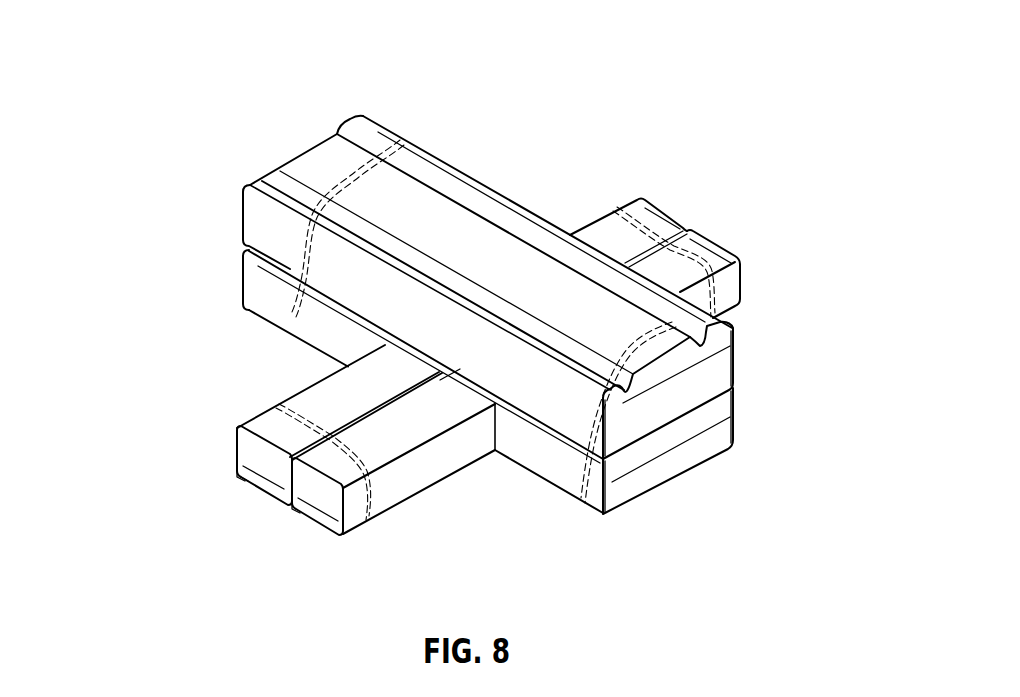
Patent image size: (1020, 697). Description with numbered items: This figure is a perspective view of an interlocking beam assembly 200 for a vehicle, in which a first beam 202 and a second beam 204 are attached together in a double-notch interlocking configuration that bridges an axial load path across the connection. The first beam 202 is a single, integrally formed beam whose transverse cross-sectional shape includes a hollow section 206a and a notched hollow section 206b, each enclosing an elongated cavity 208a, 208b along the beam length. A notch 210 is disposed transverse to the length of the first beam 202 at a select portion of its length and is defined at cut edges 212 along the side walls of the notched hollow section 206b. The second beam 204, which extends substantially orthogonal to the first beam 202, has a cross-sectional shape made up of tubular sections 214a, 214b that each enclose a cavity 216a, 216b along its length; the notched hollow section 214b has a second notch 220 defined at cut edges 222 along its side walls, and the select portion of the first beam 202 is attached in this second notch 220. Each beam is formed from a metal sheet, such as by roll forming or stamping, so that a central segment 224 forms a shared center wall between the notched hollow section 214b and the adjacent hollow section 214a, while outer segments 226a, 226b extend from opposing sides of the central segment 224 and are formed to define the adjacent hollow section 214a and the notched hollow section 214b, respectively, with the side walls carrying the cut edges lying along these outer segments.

The interlocking beam assembly 200 is at (618, 100).
The first beam 202 is at (423, 141).
The second beam 204 is at (745, 283).
The hollow section 206a is at (253, 222).
The notched hollow section 206b is at (253, 285).
The elongated cavity 208a is at (733, 361).
The elongated cavity 208b is at (733, 420).
The notch 210 is at (371, 345).
The cut edges 212 is at (425, 368).
The tubular section 214a is at (650, 215).
The notched hollow section 214b is at (704, 247).
The cavity 216a is at (252, 483).
The cavity 216b is at (316, 513).
The second notch 220 is at (495, 440).
The cut edges 222 is at (495, 404).
The central segment 224 is at (247, 498).
The outer segment 226a is at (236, 446).
The outer segment 226b is at (360, 522).